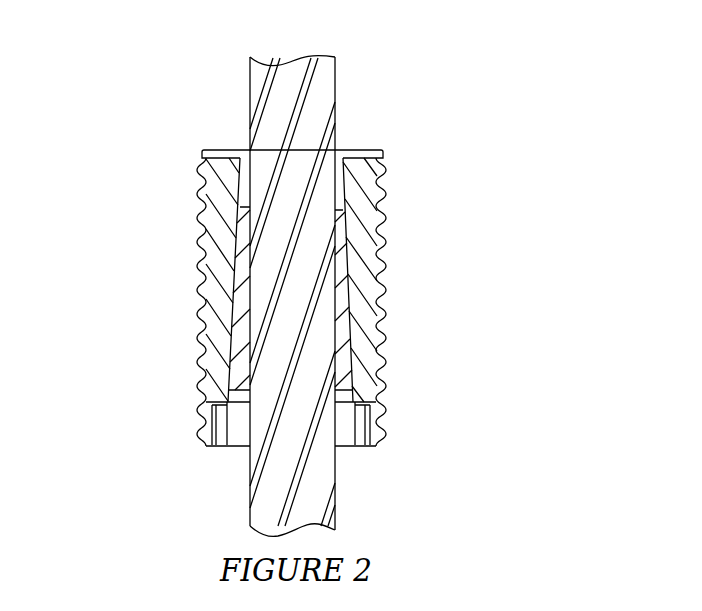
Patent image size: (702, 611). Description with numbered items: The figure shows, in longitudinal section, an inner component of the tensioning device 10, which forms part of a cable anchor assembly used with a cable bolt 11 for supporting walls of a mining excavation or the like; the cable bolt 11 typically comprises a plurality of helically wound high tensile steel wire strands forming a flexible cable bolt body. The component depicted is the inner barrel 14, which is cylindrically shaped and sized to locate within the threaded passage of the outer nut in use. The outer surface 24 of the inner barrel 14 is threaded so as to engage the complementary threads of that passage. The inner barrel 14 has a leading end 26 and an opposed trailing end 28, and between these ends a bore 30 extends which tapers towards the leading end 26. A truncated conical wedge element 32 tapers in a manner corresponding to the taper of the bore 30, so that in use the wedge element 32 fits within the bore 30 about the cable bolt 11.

The tensioning device 10 is at (308, 285).
The cable bolt 11 is at (313, 105).
The inner barrel 14 is at (367, 313).
The outer surface 24 is at (390, 187).
The leading end 26 is at (217, 150).
The trailing end 28 is at (380, 441).
The bore 30 is at (230, 377).
The truncated conical wedge element 32 is at (347, 387).